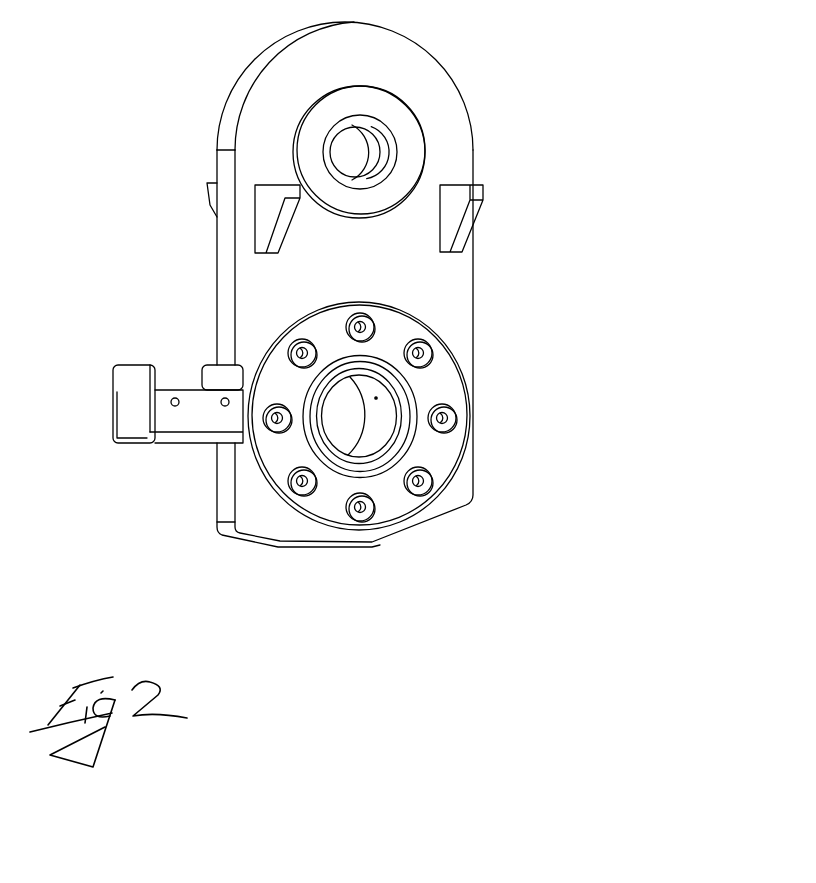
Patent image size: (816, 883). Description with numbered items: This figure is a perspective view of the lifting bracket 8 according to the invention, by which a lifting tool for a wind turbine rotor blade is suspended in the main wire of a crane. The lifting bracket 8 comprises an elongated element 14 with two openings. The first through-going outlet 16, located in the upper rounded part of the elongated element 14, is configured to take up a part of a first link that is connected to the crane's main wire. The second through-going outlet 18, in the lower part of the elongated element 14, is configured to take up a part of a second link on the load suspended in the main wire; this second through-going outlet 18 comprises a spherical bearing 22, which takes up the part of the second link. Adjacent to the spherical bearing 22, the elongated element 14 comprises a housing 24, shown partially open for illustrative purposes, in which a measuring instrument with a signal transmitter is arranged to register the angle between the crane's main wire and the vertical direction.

The lifting bracket 8 is at (450, 283).
The elongated element 14 is at (369, 234).
The first through-going outlet 16 is at (357, 152).
The second through-going outlet 18 is at (337, 418).
The spherical bearing 22 is at (400, 450).
The housing 24 is at (172, 420).